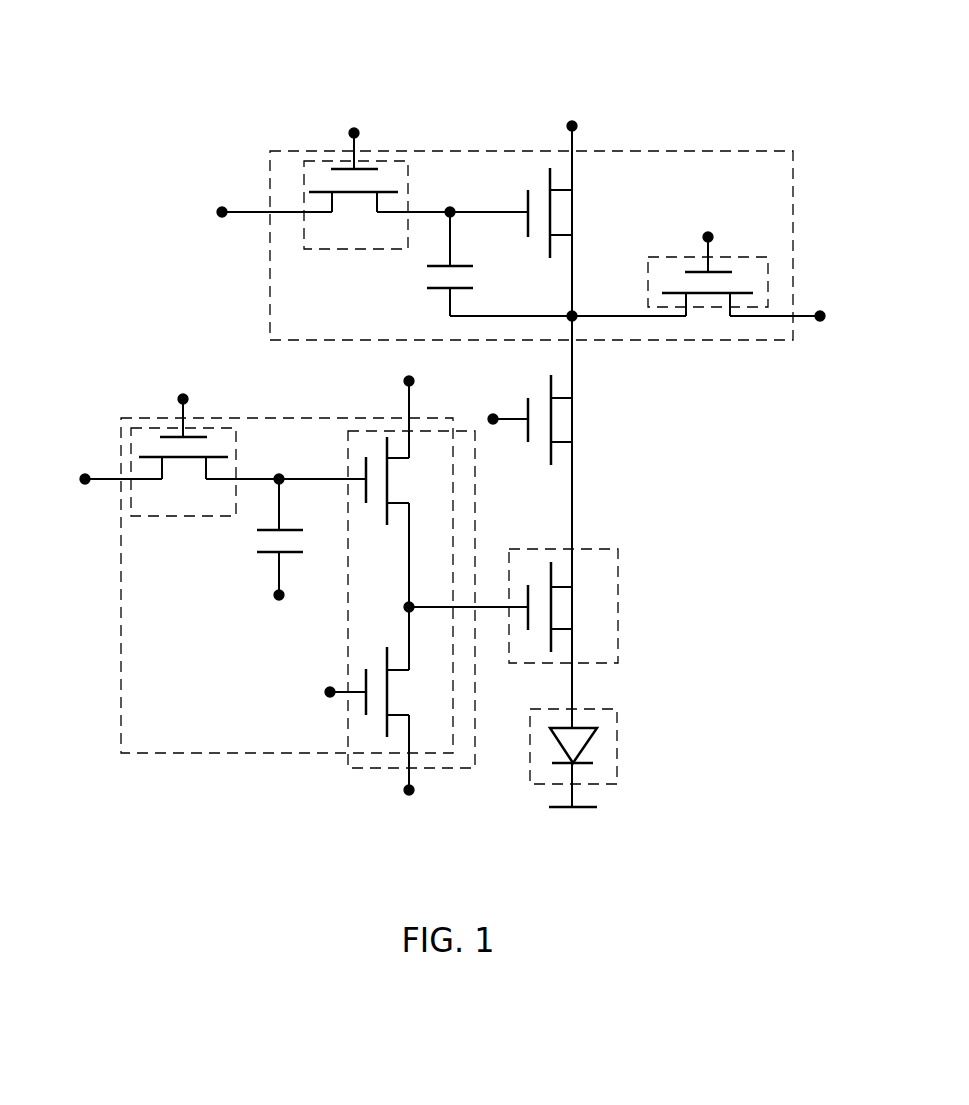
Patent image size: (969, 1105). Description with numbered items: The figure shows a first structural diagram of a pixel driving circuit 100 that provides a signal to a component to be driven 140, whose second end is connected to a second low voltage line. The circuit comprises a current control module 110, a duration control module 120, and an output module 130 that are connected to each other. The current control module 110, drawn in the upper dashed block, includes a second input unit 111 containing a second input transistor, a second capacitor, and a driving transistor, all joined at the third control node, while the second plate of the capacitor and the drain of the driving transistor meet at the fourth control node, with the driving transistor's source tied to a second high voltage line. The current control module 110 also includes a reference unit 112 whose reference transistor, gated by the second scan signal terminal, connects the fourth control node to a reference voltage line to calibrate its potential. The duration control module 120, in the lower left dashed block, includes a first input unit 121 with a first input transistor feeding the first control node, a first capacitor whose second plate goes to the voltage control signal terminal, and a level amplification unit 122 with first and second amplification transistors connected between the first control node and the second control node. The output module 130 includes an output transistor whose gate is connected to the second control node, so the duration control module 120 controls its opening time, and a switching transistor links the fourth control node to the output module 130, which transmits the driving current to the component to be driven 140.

The pixel driving circuit 100 is at (84, 131).
The current control module 110 is at (480, 151).
The second input unit 111 is at (301, 152).
The reference unit 112 is at (750, 307).
The duration control module 120 is at (202, 753).
The first input unit 121 is at (134, 428).
The level amplification unit 122 is at (353, 768).
The output module 130 is at (618, 613).
The component to be driven 140 is at (617, 746).